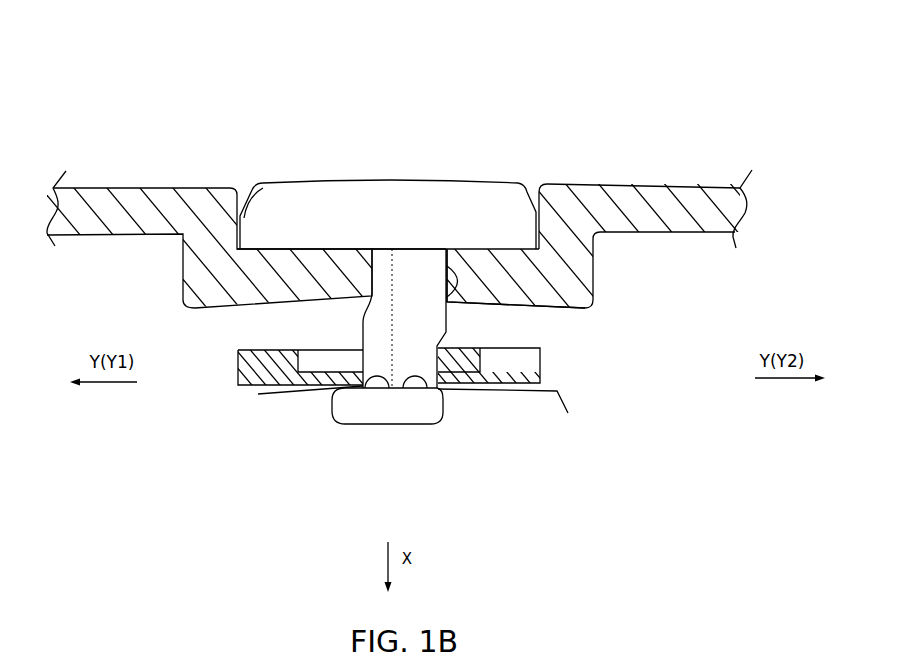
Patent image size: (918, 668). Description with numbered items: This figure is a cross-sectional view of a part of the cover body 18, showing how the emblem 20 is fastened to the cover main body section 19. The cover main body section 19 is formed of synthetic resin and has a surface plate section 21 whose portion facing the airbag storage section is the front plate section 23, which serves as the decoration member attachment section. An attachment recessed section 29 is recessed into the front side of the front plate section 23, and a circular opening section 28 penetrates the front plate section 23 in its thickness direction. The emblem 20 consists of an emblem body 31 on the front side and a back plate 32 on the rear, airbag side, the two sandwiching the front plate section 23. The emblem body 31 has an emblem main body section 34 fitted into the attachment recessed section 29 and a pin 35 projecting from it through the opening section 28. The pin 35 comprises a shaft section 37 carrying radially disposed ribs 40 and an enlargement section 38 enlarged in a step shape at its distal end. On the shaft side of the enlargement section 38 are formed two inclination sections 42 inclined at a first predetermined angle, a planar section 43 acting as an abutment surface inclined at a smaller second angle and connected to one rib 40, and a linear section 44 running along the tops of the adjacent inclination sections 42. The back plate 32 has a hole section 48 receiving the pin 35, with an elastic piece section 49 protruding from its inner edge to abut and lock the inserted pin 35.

The cover body 18 is at (619, 69).
The cover main body section 19 is at (692, 197).
The emblem 20 is at (403, 106).
The surface plate section 21 is at (746, 210).
The front plate section 23 is at (88, 190).
The opening section 28 is at (450, 302).
The attachment recessed section 29 is at (263, 184).
The emblem body 31 is at (333, 182).
The back plate 32 is at (238, 374).
The emblem main body section 34 is at (470, 190).
The pin 35 is at (330, 248).
The shaft section 37 is at (362, 322).
The enlargement section 38 is at (349, 426).
The rib 40 is at (378, 262).
The inclination section 42 is at (329, 396).
The planar section 43 is at (540, 362).
The linear section 44 is at (363, 392).
The hole section 48 is at (298, 360).
The elastic piece section 49 is at (462, 390).